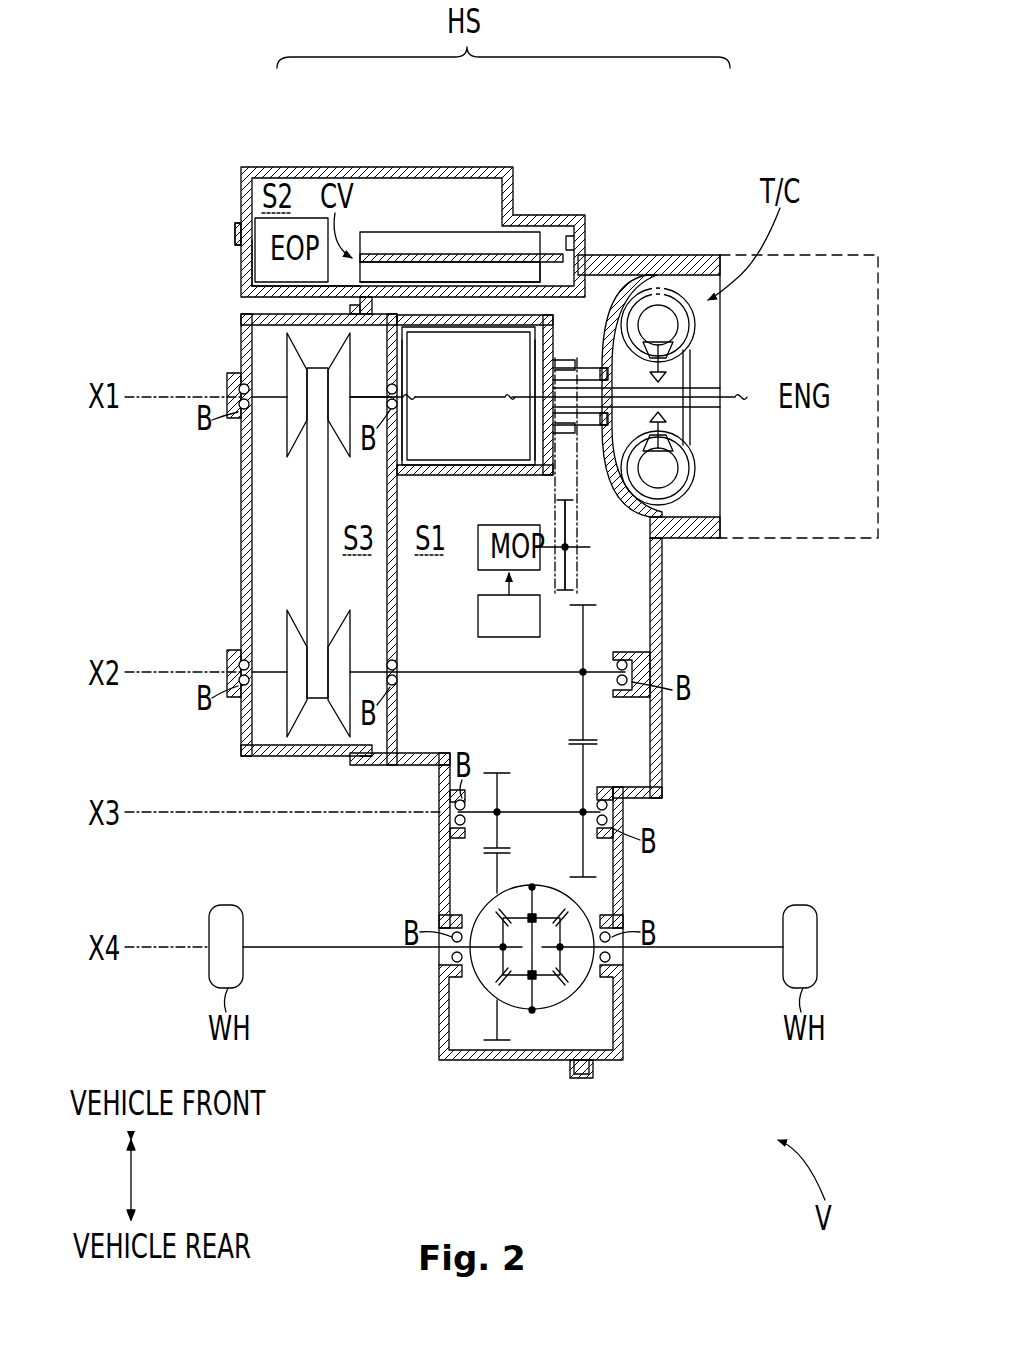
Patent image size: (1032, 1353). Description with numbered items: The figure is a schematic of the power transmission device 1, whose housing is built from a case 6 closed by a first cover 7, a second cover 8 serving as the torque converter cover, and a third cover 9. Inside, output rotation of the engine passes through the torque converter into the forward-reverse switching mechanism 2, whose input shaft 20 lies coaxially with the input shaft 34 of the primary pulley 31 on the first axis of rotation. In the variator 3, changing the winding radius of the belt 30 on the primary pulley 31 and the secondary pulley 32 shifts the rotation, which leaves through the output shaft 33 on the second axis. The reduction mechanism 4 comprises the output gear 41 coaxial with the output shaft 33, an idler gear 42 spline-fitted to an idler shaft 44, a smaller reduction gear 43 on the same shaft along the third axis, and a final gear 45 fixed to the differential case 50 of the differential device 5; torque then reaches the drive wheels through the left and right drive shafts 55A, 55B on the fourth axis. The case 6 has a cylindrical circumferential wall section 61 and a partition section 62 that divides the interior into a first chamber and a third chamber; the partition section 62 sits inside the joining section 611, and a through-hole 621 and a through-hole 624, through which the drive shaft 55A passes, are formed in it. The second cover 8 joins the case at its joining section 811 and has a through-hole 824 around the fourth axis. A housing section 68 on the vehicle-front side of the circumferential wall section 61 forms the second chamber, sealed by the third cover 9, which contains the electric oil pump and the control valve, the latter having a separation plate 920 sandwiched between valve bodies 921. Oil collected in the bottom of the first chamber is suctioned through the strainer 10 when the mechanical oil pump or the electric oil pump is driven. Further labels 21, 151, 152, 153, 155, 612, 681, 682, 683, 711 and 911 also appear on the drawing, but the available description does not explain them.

The power transmission device 1 is at (770, 115).
The forward-reverse switching mechanism 2 is at (436, 365).
The variator 3 is at (366, 530).
The reduction mechanism 4 is at (602, 822).
The differential device 5 is at (491, 945).
The case 6 is at (510, 272).
The first cover 7 is at (287, 167).
The second cover 8 is at (700, 253).
The third cover 9 is at (496, 158).
The strainer 10 is at (525, 634).
The input shaft 20 is at (522, 383).
The rotor 21 is at (535, 343).
The belt 30 is at (315, 540).
The primary pulley 31 is at (288, 422).
The secondary pulley 32 is at (300, 635).
The output shaft 33 is at (438, 672).
The input shaft 34 is at (378, 396).
The output gear 41 is at (584, 706).
The idler gear 42 is at (584, 760).
The reduction gear 43 is at (584, 843).
The idler shaft 44 is at (500, 806).
The final gear 45 is at (500, 883).
The differential case 50 is at (576, 988).
The drive shaft 55A is at (320, 947).
The drive shaft 55B is at (730, 947).
The circumferential wall section 61 is at (482, 1060).
The partition section 62 is at (398, 720).
The housing section 68 is at (226, 279).
The stator 151 is at (535, 425).
The mechanical oil pump drive gear 152 is at (552, 520).
The oil pump drive chain 153 is at (590, 470).
The pump drive member 155 is at (580, 368).
The joining section 611 is at (575, 1078).
The case bottom wall 612 is at (374, 774).
The through-hole 621 is at (412, 403).
The through-hole 624 is at (446, 960).
The first wall portion 681 is at (252, 262).
The second wall portion 682 is at (252, 292).
The third wall portion 683 is at (236, 243).
The case projecting portion 711 is at (355, 772).
The joining section 811 is at (592, 1078).
The through-hole 824 is at (612, 960).
The housing fastening portion 911 is at (236, 228).
The separation plate 920 is at (410, 254).
The valve body 921 is at (465, 275).